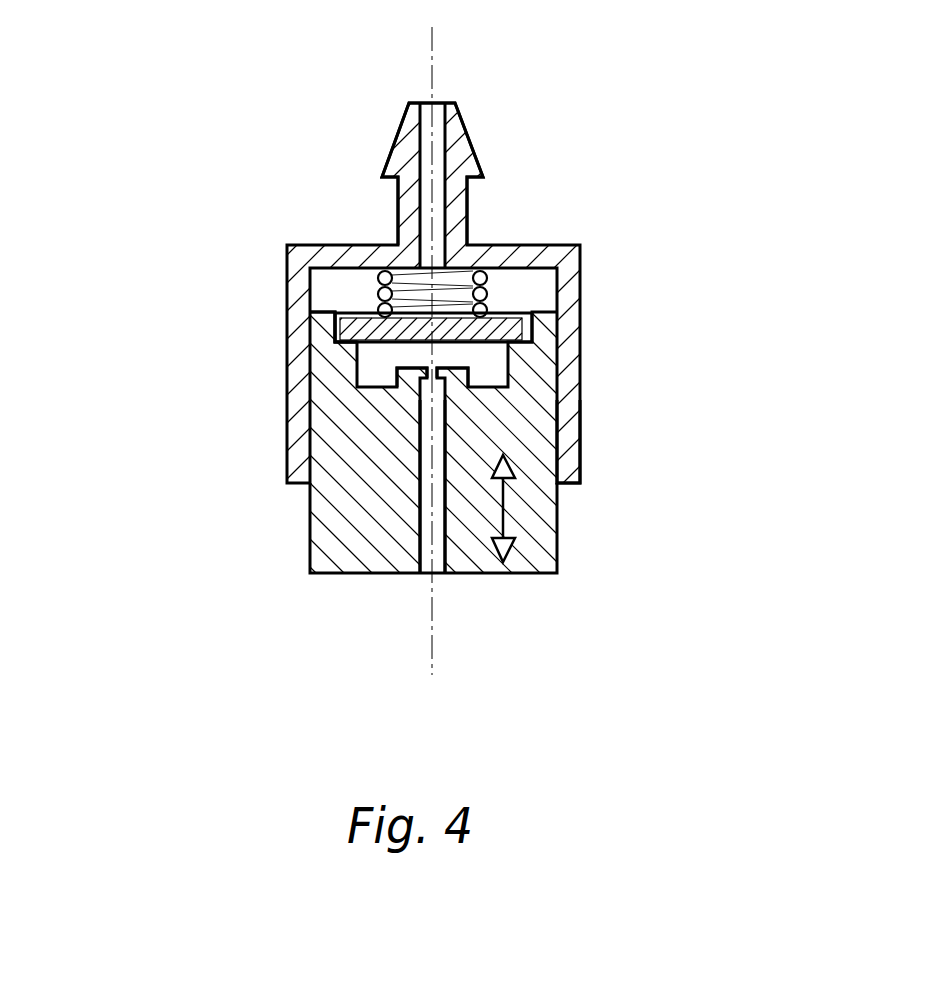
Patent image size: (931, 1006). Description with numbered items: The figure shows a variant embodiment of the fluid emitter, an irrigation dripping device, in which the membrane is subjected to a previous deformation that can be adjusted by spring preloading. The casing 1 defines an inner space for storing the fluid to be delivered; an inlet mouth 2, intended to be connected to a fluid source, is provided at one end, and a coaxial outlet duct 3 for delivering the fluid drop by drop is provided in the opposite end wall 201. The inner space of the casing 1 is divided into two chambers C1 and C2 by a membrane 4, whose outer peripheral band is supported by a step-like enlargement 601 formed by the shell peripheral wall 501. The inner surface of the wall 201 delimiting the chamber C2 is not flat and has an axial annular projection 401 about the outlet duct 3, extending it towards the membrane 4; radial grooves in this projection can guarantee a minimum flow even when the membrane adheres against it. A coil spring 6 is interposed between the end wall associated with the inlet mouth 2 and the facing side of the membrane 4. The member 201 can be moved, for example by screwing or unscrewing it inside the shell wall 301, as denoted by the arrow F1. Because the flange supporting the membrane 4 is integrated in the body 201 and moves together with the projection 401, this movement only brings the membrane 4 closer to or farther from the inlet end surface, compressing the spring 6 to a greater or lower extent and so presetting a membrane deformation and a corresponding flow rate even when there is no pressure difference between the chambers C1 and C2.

The casing 1 is at (283, 553).
The inlet mouth 2 is at (435, 101).
The lower end wall 201 is at (503, 565).
The outlet duct 3 is at (432, 608).
The shell wall 301 is at (570, 457).
The membrane 4 is at (540, 311).
The axial annular projection 401 is at (470, 367).
The shell peripheral wall 501 is at (325, 342).
The coil spring 6 is at (490, 283).
The step-like enlargement 601 is at (310, 287).
The first chamber C1 is at (347, 287).
The second chamber C2 is at (383, 367).
The arrow F1 is at (530, 522).